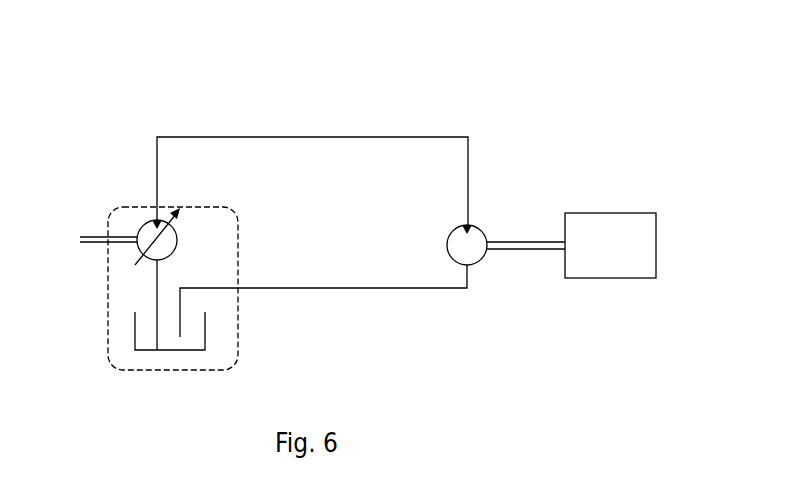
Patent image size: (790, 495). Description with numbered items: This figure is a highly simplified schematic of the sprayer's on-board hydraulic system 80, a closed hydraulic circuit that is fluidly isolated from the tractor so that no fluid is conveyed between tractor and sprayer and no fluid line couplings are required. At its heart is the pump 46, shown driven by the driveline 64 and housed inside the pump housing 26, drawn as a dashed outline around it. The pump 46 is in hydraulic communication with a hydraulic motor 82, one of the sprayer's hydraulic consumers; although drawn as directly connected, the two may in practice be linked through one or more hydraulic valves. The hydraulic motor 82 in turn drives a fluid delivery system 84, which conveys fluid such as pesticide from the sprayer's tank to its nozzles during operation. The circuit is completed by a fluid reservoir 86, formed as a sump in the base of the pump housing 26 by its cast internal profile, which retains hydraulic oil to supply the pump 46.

The pump housing 26 is at (118, 367).
The pump 46 is at (147, 225).
The driveline 64 is at (95, 240).
The hydraulic system 80 is at (452, 104).
The hydraulic motor 82 is at (485, 225).
The fluid delivery system 84 is at (612, 278).
The fluid reservoir 86 is at (205, 335).